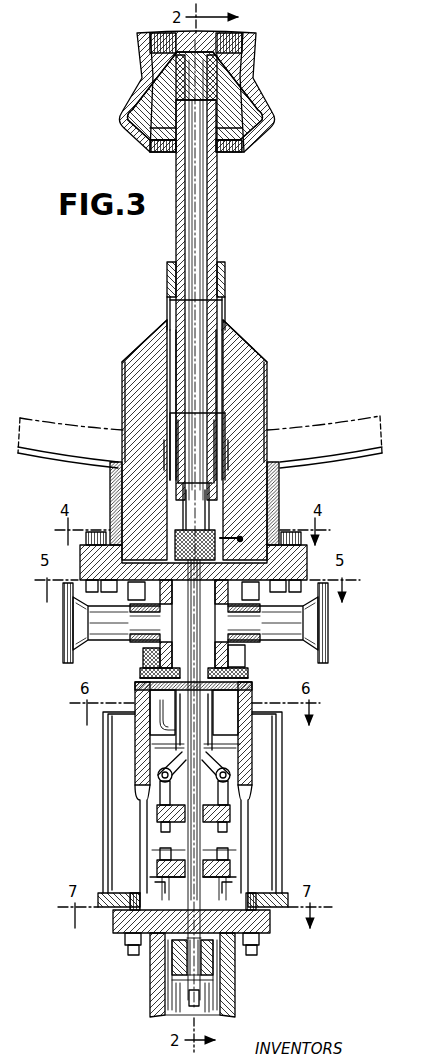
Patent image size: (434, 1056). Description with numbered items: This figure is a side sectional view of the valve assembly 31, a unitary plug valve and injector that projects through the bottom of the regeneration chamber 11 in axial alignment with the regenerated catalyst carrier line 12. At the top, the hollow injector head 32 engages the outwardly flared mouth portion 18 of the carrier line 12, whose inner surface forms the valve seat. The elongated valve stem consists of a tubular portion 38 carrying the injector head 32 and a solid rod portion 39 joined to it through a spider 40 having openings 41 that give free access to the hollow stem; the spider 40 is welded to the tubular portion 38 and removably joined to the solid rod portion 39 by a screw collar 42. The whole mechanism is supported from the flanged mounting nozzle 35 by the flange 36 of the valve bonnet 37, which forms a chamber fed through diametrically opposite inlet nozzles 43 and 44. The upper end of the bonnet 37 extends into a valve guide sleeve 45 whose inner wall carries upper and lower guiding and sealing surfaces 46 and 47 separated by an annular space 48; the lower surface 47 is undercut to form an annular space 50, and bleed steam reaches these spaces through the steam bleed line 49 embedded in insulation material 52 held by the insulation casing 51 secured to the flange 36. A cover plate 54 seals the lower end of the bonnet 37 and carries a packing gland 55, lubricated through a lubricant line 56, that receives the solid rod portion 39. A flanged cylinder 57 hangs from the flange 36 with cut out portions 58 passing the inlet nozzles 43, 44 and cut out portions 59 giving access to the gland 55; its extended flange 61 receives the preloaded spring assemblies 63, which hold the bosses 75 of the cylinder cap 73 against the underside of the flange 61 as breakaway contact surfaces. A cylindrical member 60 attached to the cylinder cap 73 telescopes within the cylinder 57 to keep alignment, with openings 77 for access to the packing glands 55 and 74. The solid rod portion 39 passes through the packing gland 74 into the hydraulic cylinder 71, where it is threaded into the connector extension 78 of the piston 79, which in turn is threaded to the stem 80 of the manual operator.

The regeneration chamber 11 is at (42, 458).
The regenerated catalyst carrier line 12 is at (137, 47).
The outwardly flared mouth portion 18 is at (128, 112).
The valve assembly 31 is at (236, 296).
The hollow injector head 32 is at (252, 146).
The flanged mounting nozzle 35 is at (112, 485).
The flange 36 is at (80, 568).
The valve bonnet 37 is at (245, 655).
The tubular portion 38 is at (213, 230).
The solid rod portion 39 is at (200, 622).
The spider 40 is at (185, 528).
The openings 41 is at (208, 503).
The screw collar 42 is at (226, 545).
The inlet nozzle 43 is at (63, 623).
The inlet nozzle 44 is at (328, 623).
The valve guide sleeve 45 is at (166, 334).
The upper guiding and sealing surface 46 is at (170, 278).
The lower guiding and sealing surface 47 is at (172, 447).
The annular space 48 is at (215, 340).
The steam bleed line 49 is at (235, 448).
The annular space 50 is at (176, 396).
The insulation casing 51 is at (266, 382).
The insulation material 52 is at (248, 358).
The cover plate 54 is at (207, 720).
The packing gland 55 is at (208, 752).
The lubricant line 56 is at (158, 696).
The flanged cylinder 57 is at (248, 730).
The cut out portions 58 is at (143, 653).
The cut out portions 59 is at (142, 808).
The cylindrical member 60 is at (140, 773).
The extended flange 61 is at (108, 912).
The preloaded spring assemblies 63 is at (104, 764).
The hydraulic cylinder 71 is at (150, 988).
The cylinder cap 73 is at (264, 933).
The packing gland 74 is at (168, 882).
The bosses 75 is at (268, 905).
The openings 77 is at (152, 820).
The connector extension 78 is at (210, 955).
The piston 79 is at (214, 992).
The stem 80 is at (185, 1000).